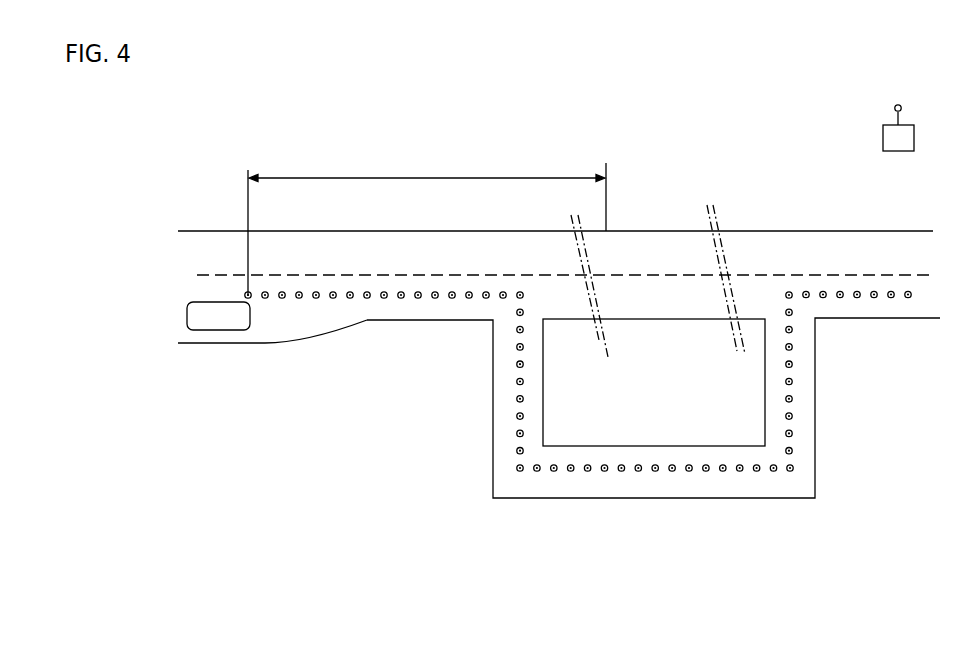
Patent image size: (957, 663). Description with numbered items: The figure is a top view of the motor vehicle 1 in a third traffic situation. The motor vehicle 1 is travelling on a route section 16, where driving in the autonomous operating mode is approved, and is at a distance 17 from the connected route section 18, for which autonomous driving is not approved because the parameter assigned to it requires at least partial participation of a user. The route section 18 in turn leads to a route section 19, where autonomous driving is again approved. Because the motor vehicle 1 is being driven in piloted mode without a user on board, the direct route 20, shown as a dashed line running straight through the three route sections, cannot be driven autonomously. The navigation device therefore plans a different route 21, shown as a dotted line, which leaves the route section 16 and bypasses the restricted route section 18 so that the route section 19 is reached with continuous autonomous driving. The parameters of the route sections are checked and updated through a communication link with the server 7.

The motor vehicle 1 is at (222, 344).
The server 7 is at (914, 137).
The route section 16 is at (380, 260).
The distance 17 is at (460, 175).
The route section 18 is at (653, 243).
The route section 19 is at (810, 243).
The route 20 is at (577, 276).
The route 21 is at (433, 300).